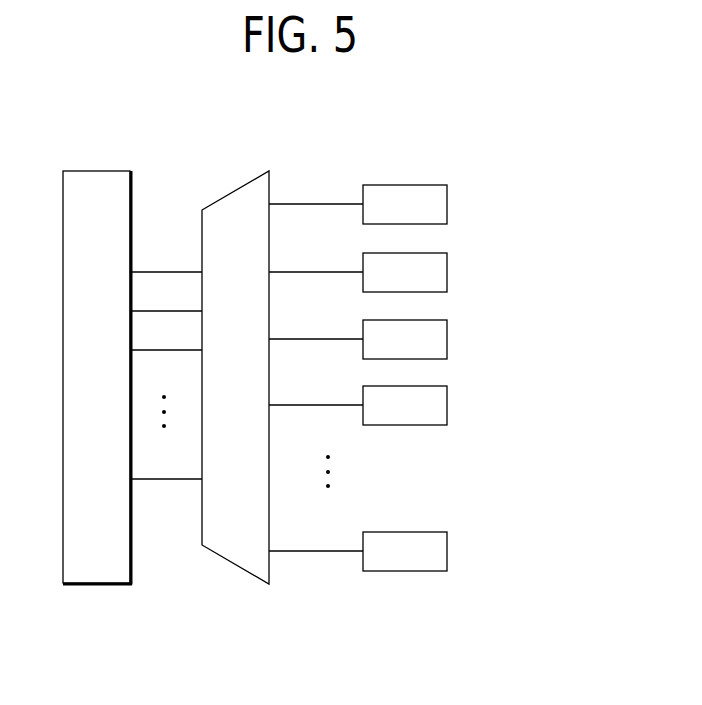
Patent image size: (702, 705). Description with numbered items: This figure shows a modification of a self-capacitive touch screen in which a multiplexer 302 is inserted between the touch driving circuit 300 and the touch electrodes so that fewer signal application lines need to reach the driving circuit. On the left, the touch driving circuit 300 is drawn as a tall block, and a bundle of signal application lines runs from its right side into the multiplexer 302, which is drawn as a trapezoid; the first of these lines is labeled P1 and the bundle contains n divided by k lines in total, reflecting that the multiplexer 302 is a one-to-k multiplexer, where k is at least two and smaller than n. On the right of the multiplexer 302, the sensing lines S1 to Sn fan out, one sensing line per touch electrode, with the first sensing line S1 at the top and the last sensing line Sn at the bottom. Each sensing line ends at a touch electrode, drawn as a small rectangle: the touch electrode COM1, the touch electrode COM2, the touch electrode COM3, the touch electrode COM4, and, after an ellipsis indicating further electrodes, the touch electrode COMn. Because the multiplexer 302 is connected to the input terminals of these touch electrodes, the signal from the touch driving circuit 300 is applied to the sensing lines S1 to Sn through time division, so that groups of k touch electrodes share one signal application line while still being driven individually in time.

The touch driving circuit 300 is at (77, 393).
The multiplexer 302 is at (217, 393).
The first input channel line P1 is at (164, 272).
The sensing line S1 is at (315, 203).
The sensing line Sn is at (315, 552).
The touch electrode COM1 is at (447, 204).
The touch electrode COM2 is at (447, 272).
The touch electrode COM3 is at (447, 339).
The touch electrode COM4 is at (447, 405).
The touch electrode COMn is at (447, 551).